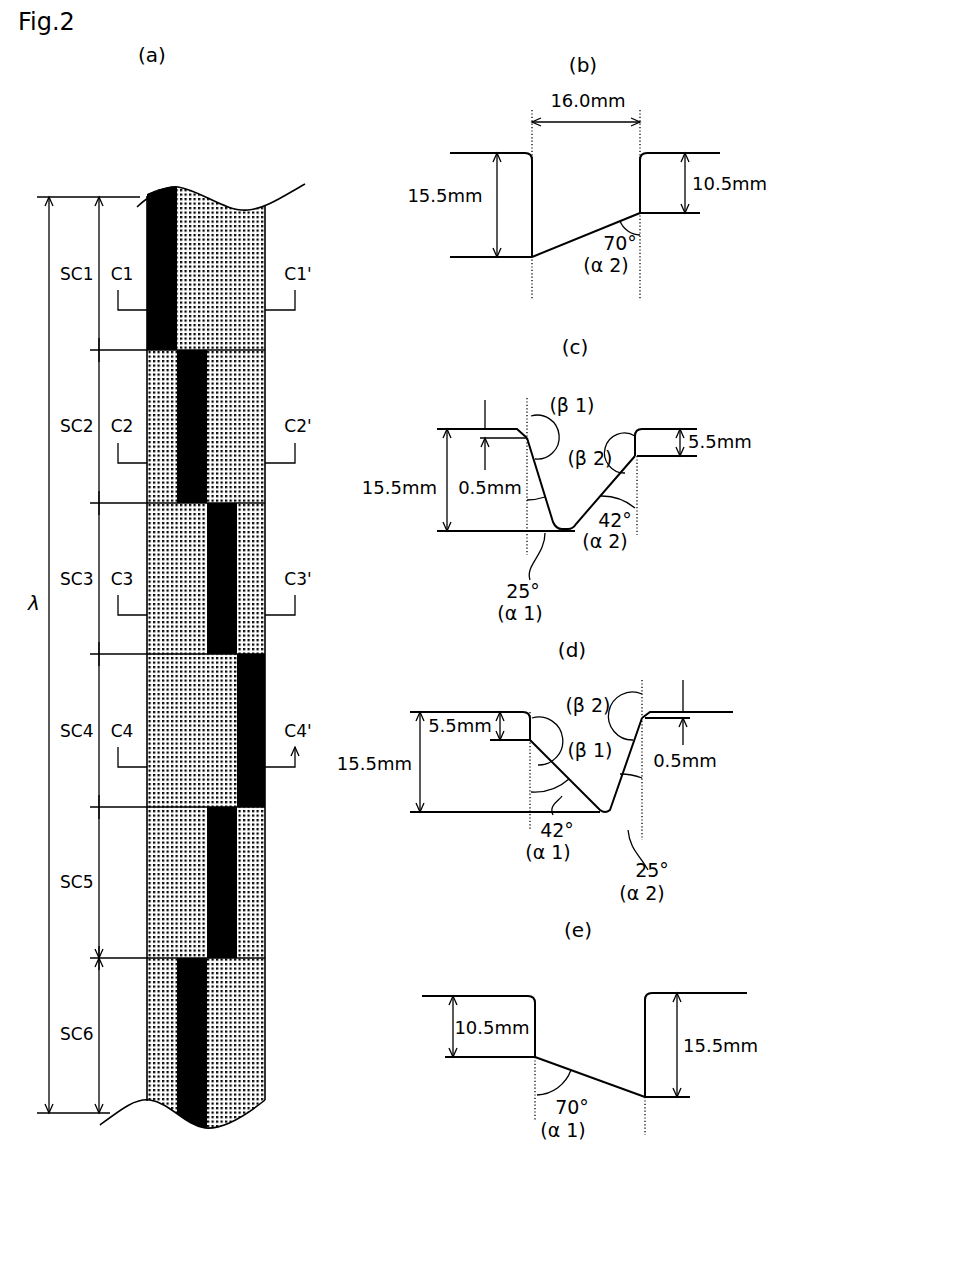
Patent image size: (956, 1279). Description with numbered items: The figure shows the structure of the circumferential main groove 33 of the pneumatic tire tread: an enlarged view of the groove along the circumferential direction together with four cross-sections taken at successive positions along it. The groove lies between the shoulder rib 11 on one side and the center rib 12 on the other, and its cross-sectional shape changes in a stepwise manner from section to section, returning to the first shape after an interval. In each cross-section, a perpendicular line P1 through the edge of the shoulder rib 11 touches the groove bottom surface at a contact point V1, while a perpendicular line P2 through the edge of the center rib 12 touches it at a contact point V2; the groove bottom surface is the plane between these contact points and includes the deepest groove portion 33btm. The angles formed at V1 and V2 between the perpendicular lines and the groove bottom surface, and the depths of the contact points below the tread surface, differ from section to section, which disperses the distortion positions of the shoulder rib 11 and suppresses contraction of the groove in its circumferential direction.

The shoulder rib 11 is at (464, 150).
The center rib 12 is at (670, 150).
The circumferential main groove 33 is at (205, 184).
The deepest groove portion 33btm is at (177, 333).
The contact point V1 is at (533, 255).
The contact point V2 is at (640, 212).
The perpendicular line P1 is at (532, 297).
The perpendicular line P2 is at (640, 270).